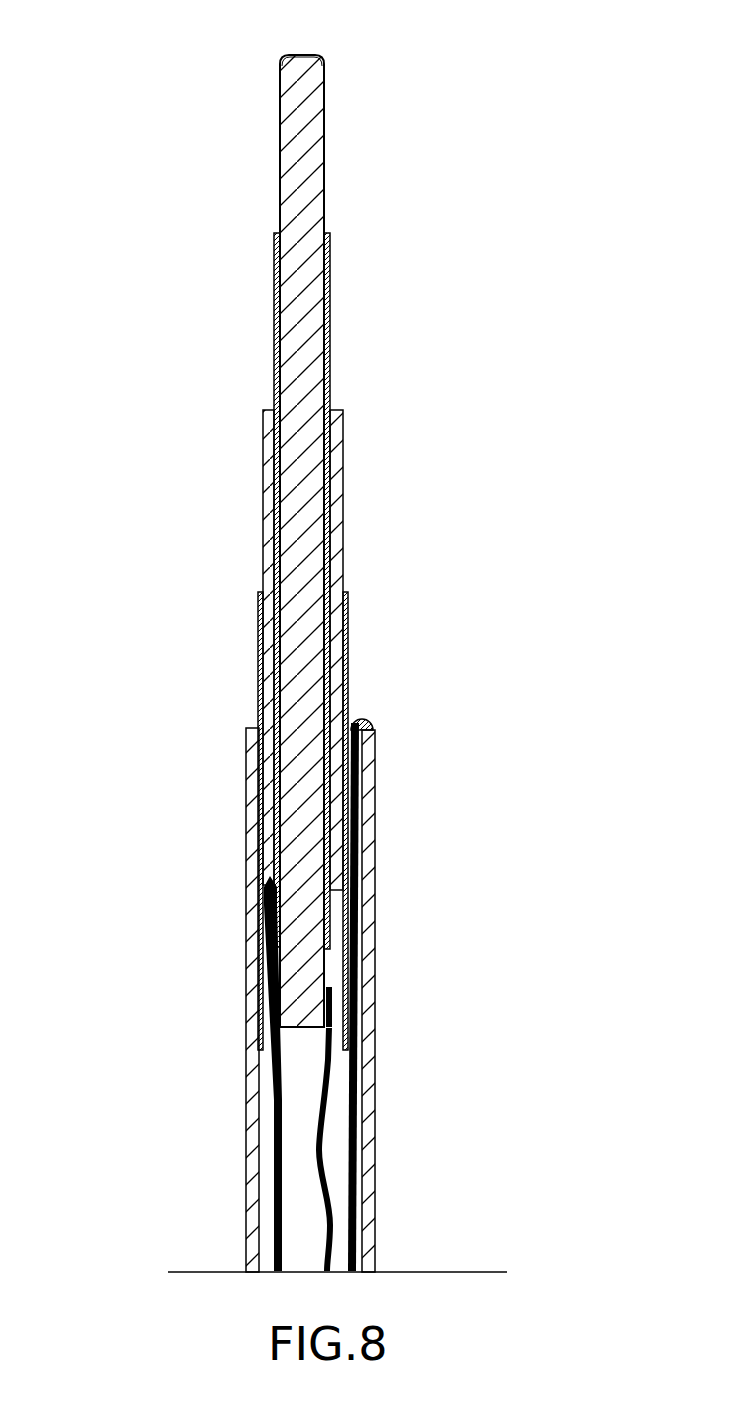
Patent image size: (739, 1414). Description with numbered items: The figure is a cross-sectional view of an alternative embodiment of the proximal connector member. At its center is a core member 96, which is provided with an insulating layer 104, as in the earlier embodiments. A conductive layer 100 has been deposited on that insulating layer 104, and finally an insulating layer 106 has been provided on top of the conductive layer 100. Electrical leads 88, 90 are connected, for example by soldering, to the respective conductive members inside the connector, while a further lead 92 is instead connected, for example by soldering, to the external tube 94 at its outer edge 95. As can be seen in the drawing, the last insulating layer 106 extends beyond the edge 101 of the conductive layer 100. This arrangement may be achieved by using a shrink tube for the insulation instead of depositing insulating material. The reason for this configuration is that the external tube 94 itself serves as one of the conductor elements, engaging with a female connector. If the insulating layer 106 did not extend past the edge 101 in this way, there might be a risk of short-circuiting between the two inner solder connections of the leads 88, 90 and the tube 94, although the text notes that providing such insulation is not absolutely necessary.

The electrical lead 88 is at (285, 1063).
The electrical lead 90 is at (330, 1125).
The lead 92 is at (355, 1193).
The tube 94 is at (204, 1090).
The outer edge 95 is at (377, 717).
The core member 96 is at (302, 54).
The conductive layer 100 is at (270, 310).
The edge 101 is at (266, 874).
The insulating layer 104 is at (280, 163).
The insulating layer 106 is at (243, 618).